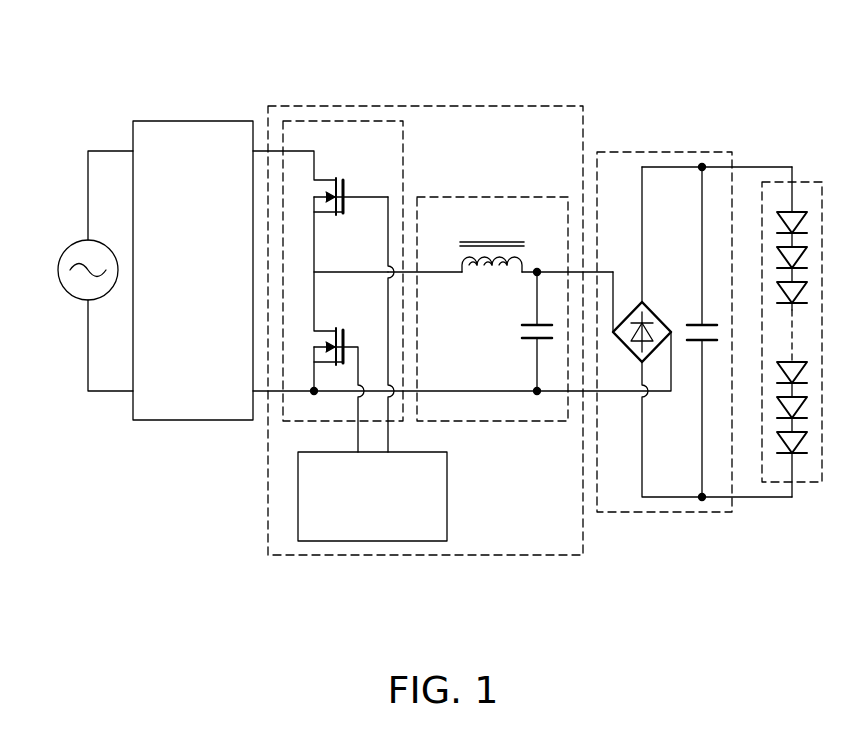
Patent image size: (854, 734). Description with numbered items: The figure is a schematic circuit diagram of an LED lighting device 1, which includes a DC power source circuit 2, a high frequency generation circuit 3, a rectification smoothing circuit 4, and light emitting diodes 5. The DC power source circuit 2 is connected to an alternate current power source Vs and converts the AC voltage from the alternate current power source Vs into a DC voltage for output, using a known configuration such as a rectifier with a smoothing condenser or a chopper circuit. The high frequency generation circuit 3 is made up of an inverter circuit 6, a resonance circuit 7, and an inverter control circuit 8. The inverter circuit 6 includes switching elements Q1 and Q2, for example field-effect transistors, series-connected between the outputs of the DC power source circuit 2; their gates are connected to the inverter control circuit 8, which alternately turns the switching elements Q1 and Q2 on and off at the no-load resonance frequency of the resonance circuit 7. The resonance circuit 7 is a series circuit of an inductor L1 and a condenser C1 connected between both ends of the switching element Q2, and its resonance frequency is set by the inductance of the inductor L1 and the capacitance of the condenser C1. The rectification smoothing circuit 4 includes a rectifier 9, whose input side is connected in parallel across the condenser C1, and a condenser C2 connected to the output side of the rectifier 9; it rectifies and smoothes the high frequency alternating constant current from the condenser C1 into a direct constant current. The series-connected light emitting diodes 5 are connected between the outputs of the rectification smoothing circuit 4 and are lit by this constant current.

The LED lighting device 1 is at (543, 62).
The DC power source circuit 2 is at (195, 121).
The high frequency generation circuit 3 is at (434, 106).
The rectification smoothing circuit 4 is at (645, 152).
The light emitting diodes 5 is at (764, 182).
The inverter circuit 6 is at (381, 120).
The resonance circuit 7 is at (490, 197).
The inverter control circuit 8 is at (375, 541).
The rectifier 9 is at (632, 305).
The switching element Q1 is at (329, 179).
The switching element Q2 is at (330, 362).
The inductor L1 is at (466, 241).
The condenser C1 is at (530, 343).
The condenser C2 is at (689, 322).
The alternate current power source Vs is at (70, 246).